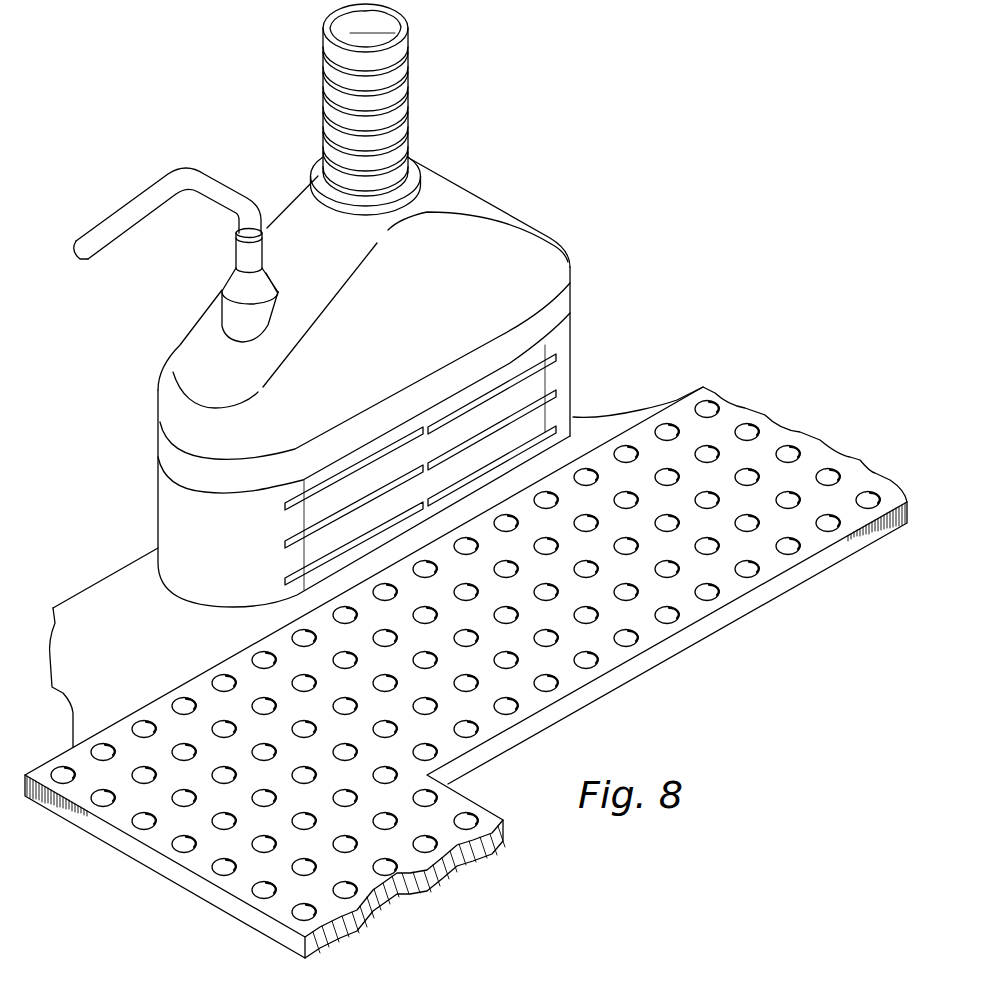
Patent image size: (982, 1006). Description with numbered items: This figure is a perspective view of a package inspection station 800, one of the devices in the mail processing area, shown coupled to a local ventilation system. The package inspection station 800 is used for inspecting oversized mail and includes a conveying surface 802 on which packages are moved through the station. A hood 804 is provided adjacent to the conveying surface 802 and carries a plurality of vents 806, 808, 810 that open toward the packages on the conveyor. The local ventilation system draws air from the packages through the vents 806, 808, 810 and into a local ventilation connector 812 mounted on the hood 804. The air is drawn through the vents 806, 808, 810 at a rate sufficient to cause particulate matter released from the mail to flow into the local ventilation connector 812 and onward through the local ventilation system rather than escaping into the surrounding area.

The package inspection station 800 is at (683, 222).
The conveying surface 802 is at (157, 702).
The hood 804 is at (488, 196).
The vent 806 is at (556, 359).
The vent 808 is at (556, 397).
The vent 810 is at (287, 582).
The local ventilation connector 812 is at (322, 96).